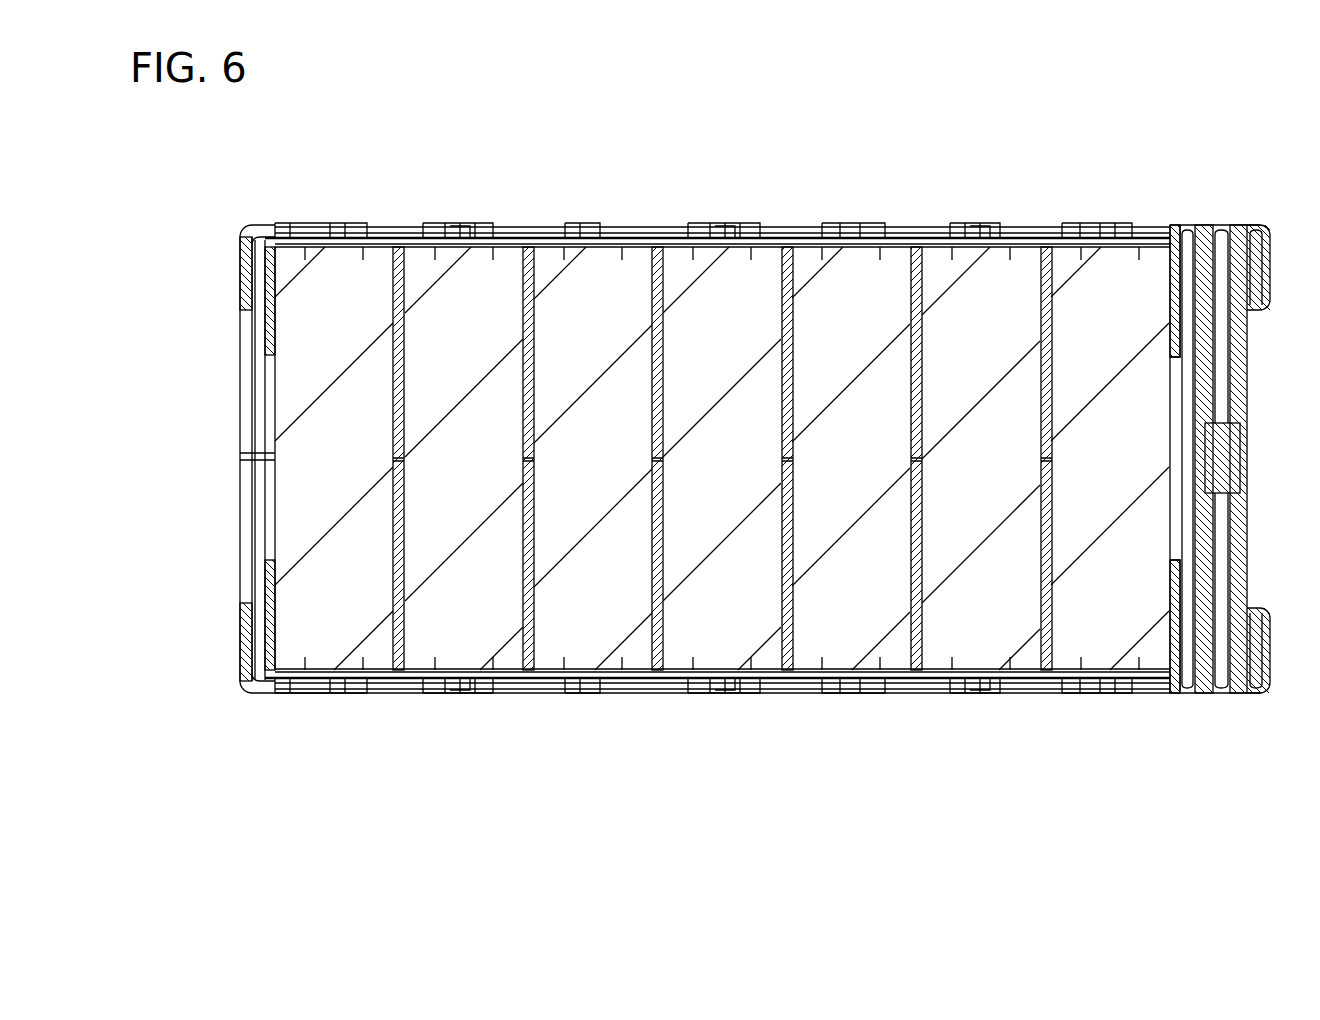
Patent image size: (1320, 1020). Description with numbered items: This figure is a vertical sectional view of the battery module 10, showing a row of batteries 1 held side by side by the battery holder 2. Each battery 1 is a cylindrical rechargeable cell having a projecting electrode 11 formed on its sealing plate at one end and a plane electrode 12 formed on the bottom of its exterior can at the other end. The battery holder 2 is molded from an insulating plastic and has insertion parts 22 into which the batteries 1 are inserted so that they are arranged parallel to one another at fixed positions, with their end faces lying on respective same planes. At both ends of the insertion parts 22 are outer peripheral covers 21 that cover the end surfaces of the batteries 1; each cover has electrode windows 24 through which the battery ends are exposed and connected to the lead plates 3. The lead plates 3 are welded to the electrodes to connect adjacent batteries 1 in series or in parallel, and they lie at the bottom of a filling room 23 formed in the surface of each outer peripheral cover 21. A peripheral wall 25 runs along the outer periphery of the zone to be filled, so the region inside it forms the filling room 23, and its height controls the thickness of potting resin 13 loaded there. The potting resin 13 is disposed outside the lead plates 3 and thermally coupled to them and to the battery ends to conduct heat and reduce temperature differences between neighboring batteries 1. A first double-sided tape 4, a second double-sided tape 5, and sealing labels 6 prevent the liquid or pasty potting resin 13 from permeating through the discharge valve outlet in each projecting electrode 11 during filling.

The battery 1 is at (314, 470).
The battery holder 2 is at (240, 292).
The lead plate 3 is at (303, 234).
The first double-sided tape 4 is at (383, 248).
The second double-sided tape 5 is at (410, 228).
The sealing label 6 is at (352, 228).
The battery module 10 is at (1133, 130).
The projecting electrode 11 is at (338, 234).
The plane electrode 12 is at (498, 228).
The potting resin 13 is at (618, 228).
The outer peripheral cover 21 is at (428, 228).
The insertion part 22 is at (393, 380).
The filling room 23 is at (276, 228).
The electrode window 24 is at (274, 228).
The peripheral wall 25 is at (530, 228).